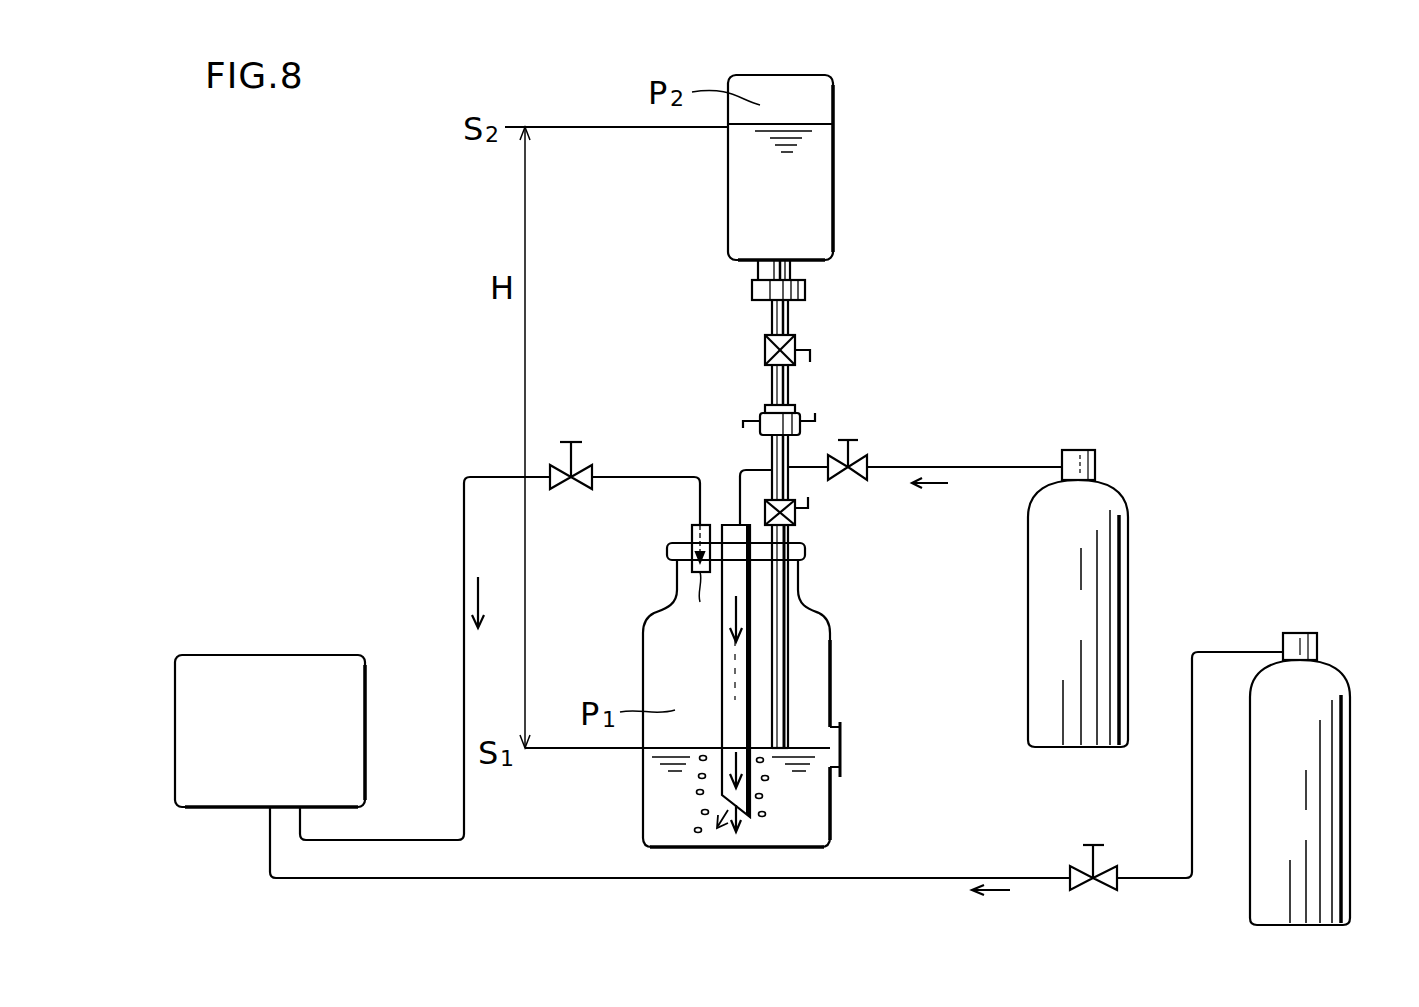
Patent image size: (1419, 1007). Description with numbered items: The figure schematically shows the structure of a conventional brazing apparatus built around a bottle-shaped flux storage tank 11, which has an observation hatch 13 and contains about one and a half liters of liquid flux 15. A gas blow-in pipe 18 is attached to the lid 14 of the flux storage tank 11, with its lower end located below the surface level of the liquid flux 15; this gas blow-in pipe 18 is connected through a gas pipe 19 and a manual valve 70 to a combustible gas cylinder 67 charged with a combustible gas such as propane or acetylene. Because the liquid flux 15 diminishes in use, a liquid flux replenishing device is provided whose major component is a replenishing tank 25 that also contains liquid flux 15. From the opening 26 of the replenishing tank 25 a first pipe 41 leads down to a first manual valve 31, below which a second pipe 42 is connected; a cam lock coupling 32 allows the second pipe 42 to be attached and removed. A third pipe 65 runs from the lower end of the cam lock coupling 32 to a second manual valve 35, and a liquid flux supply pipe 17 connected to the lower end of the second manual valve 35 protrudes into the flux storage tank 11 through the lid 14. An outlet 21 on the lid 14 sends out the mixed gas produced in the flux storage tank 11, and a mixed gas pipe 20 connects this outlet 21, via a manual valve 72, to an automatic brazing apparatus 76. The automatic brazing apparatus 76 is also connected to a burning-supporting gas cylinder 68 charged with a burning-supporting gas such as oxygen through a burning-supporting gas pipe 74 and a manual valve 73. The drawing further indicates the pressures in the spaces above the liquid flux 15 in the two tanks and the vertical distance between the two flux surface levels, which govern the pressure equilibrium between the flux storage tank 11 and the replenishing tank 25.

The flux storage tank 11 is at (643, 668).
The observation hatch 13 is at (842, 760).
The lid 14 is at (806, 552).
The liquid flux 15 is at (795, 215).
The liquid flux supply pipe 17 is at (790, 648).
The gas blow-in pipe 18 is at (722, 636).
The gas pipe 19 is at (995, 467).
The mixed gas pipe 20 is at (475, 477).
The outlet 21 is at (698, 528).
The replenishing tank 25 is at (835, 100).
The opening 26 is at (806, 290).
The first manual valve 31 is at (796, 346).
The cam lock coupling 32 is at (802, 406).
The second manual valve 35 is at (796, 520).
The first pipe 41 is at (772, 320).
The second pipe 42 is at (772, 383).
The third pipe 65 is at (772, 450).
The combustible gas cylinder 67 is at (1128, 530).
The burning-supporting gas cylinder 68 is at (1350, 712).
The manual valve 70 is at (866, 460).
The manual valve 72 is at (590, 465).
The manual valve 73 is at (1108, 870).
The burning-supporting gas pipe 74 is at (856, 878).
The automatic brazing apparatus 76 is at (276, 655).